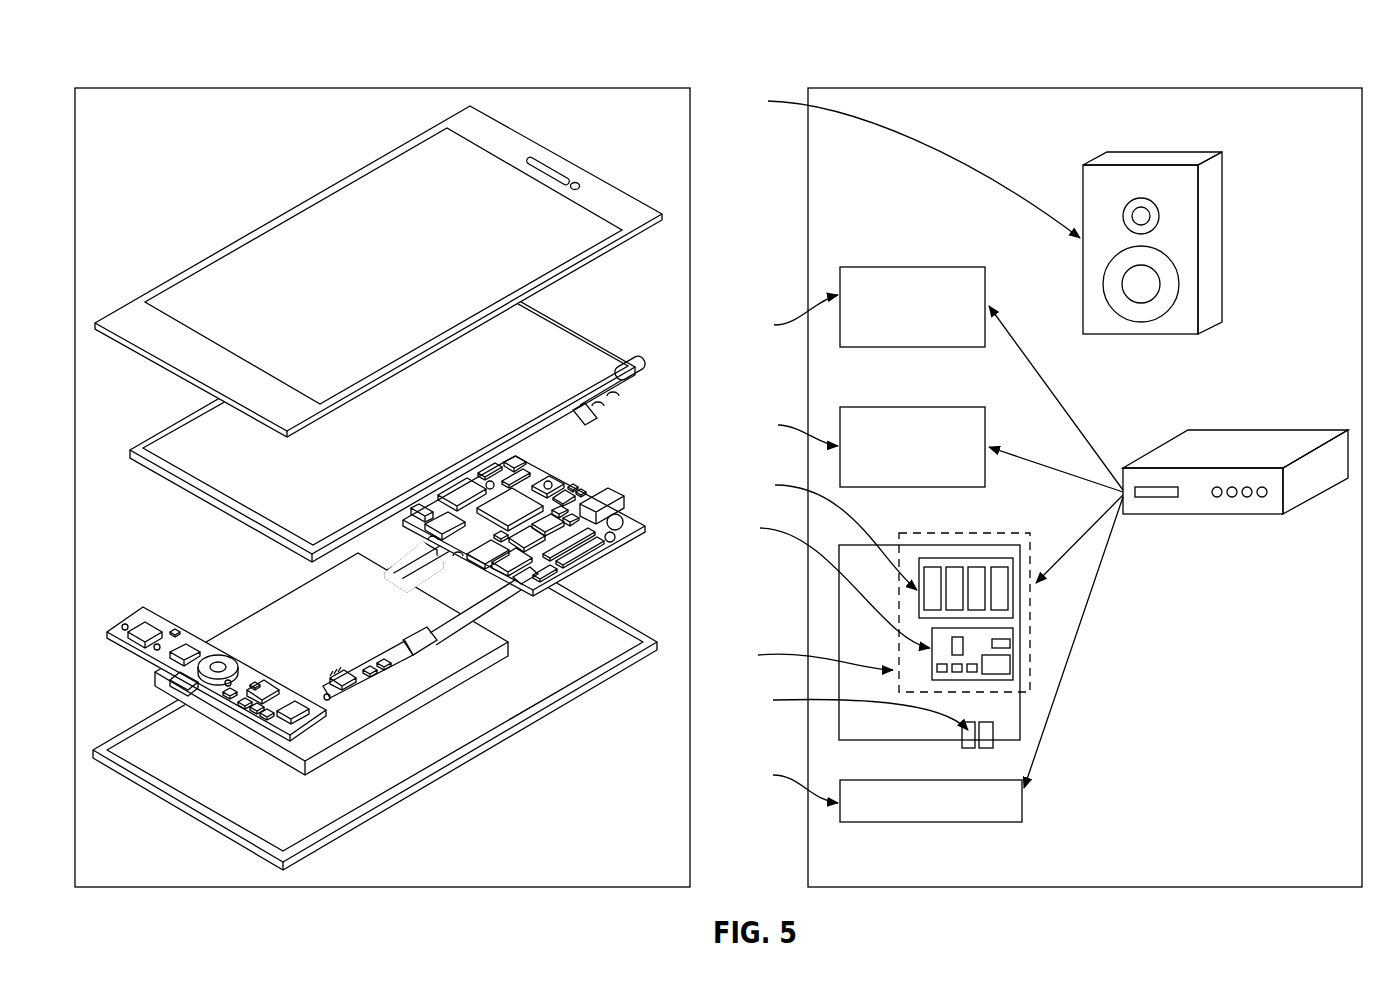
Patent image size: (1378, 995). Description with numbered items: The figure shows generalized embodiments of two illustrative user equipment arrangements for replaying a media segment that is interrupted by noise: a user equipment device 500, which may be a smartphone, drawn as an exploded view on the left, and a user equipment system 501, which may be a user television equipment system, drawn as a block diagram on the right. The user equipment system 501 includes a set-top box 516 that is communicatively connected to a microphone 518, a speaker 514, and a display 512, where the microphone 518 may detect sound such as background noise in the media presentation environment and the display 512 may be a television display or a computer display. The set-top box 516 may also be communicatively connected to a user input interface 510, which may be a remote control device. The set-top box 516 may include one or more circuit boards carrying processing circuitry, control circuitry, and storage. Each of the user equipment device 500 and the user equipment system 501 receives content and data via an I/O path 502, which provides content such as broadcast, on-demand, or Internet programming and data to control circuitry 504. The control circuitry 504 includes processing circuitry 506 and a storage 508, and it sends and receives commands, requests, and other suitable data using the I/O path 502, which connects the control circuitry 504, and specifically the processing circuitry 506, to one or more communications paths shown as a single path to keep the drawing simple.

The user equipment device 500 is at (205, 58).
The user equipment system 501 is at (1262, 65).
The I/O path 502 is at (202, 686).
The control circuitry 504 is at (596, 568).
The processing circuitry 506 is at (578, 530).
The storage 508 is at (512, 505).
The user input interface 510 is at (552, 378).
The display 512 is at (626, 378).
The speaker 514 is at (556, 165).
The set-top box 516 is at (1268, 428).
The microphone 518 is at (284, 699).